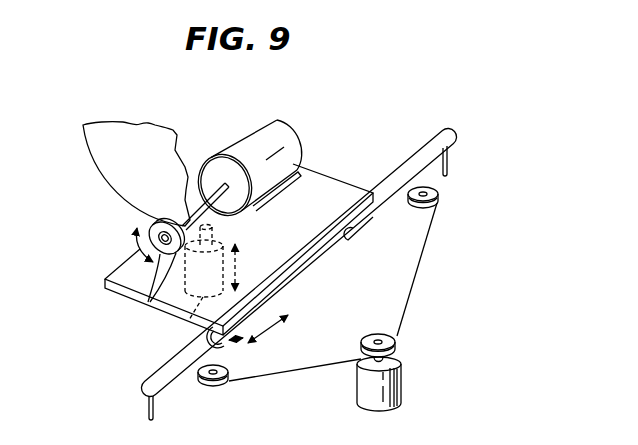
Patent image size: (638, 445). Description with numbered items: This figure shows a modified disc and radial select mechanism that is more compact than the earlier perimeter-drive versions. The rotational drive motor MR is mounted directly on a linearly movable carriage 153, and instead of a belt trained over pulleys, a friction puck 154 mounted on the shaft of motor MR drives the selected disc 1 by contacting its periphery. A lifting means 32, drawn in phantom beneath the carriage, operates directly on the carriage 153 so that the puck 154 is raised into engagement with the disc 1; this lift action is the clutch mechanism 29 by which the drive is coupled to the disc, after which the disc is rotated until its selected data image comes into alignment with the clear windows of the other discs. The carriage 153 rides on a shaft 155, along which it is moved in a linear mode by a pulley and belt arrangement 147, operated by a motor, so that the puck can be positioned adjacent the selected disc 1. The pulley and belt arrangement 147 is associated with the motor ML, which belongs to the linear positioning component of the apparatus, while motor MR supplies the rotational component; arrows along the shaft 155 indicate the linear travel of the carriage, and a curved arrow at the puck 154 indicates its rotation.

The disc 1 is at (113, 175).
The motor MR is at (244, 146).
The carriage 153 is at (310, 188).
The shaft 155 is at (428, 141).
The pulley and belt arrangement 147 is at (288, 280).
The friction puck 154 is at (148, 303).
The lifting means 32 is at (236, 242).
The clutch mechanism 29 is at (186, 322).
The motor ML is at (402, 393).